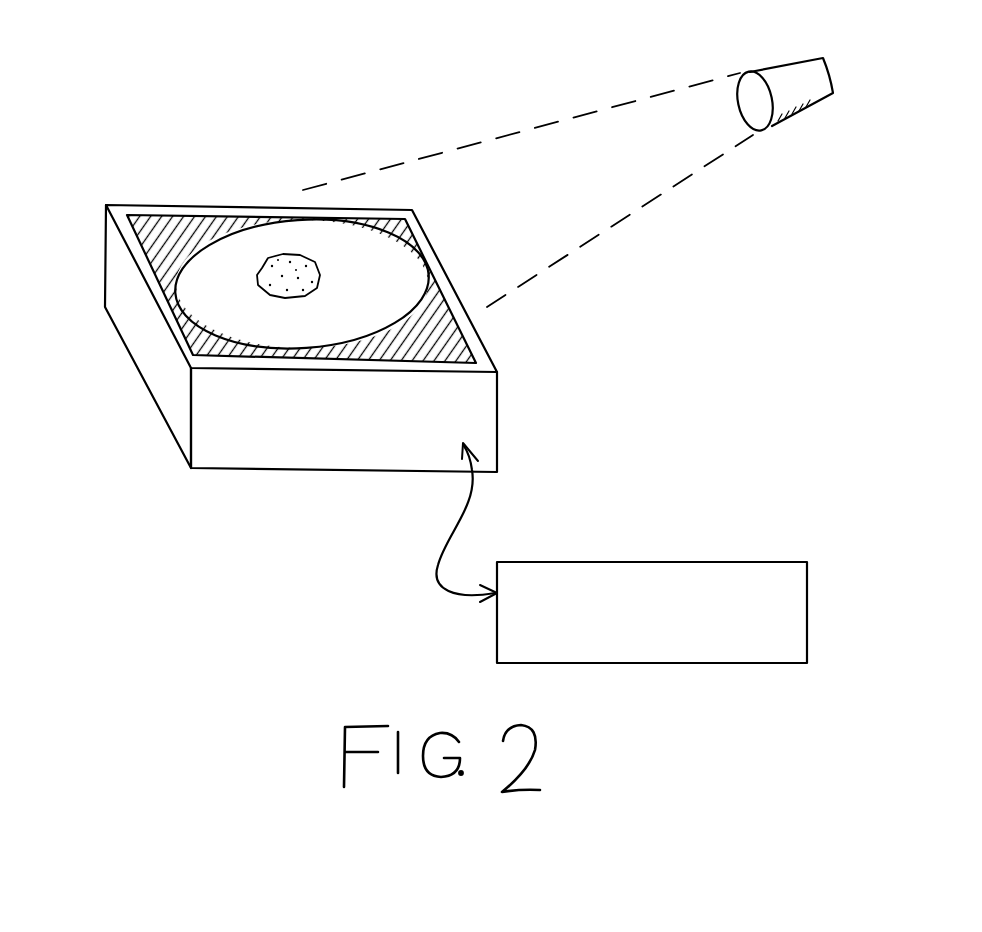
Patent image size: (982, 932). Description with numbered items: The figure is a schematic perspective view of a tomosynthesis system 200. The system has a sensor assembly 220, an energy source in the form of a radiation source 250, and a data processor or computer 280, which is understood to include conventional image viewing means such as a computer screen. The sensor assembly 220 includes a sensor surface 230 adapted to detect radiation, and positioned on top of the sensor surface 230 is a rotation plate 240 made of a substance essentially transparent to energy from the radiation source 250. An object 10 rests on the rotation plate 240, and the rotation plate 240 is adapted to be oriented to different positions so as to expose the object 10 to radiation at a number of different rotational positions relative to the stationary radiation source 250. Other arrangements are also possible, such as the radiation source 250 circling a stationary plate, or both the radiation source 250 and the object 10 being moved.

The tomosynthesis system 200 is at (87, 703).
The object 10 is at (270, 258).
The sensor assembly 220 is at (485, 401).
The sensor surface 230 is at (143, 223).
The rotation plate 240 is at (213, 255).
The radiation source 250 is at (763, 70).
The data processor or computer 280 is at (522, 572).